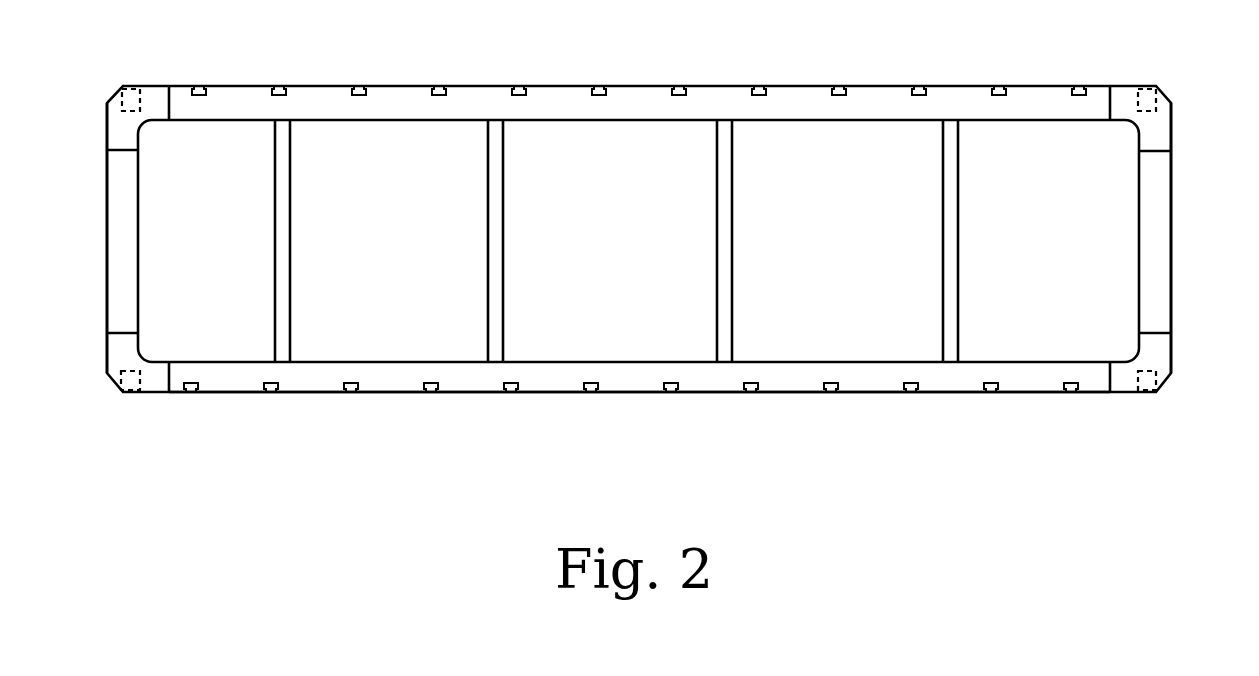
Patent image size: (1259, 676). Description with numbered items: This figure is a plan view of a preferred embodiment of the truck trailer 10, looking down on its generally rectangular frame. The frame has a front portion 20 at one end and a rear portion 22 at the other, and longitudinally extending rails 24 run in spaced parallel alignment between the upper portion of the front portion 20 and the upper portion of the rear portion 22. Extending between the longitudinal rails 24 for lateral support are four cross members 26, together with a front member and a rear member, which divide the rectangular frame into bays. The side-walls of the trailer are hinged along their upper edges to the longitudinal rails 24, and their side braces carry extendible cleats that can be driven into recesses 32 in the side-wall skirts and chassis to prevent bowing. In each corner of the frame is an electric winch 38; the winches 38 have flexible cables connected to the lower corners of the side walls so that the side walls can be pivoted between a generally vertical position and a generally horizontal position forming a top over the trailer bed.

The truck trailer 10 is at (637, 88).
The front portion 20 is at (120, 188).
The rear portion 22 is at (1155, 215).
The longitudinally extending rails 24 is at (955, 102).
The cross members 26 is at (278, 250).
The recesses 32 is at (1075, 393).
The electric winches 38 is at (150, 92).